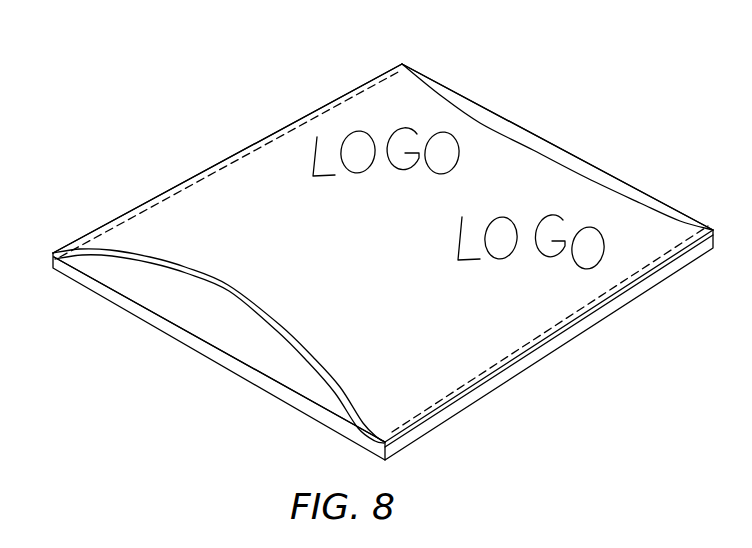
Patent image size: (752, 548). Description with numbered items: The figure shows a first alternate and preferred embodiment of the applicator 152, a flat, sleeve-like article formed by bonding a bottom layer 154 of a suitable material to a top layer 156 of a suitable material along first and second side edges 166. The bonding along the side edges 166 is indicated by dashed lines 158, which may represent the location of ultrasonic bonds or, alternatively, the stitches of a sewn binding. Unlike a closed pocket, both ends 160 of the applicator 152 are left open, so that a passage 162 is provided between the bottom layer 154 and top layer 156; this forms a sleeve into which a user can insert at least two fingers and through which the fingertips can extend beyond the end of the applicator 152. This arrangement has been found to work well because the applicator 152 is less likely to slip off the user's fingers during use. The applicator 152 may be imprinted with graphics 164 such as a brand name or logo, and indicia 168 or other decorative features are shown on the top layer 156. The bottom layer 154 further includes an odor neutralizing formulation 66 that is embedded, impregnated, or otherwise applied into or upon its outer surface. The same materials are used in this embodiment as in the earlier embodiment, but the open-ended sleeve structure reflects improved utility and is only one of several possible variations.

The applicator 152 is at (166, 132).
The bottom layer 154 is at (102, 296).
The top layer 156 is at (423, 105).
The dashed lines 158 is at (325, 108).
The ends 160 is at (476, 110).
The passage 162 is at (542, 138).
The graphics 164 is at (544, 222).
The side edges 166 is at (270, 132).
The indicia 168 is at (262, 260).
The odor neutralizing formulation 66 is at (477, 428).